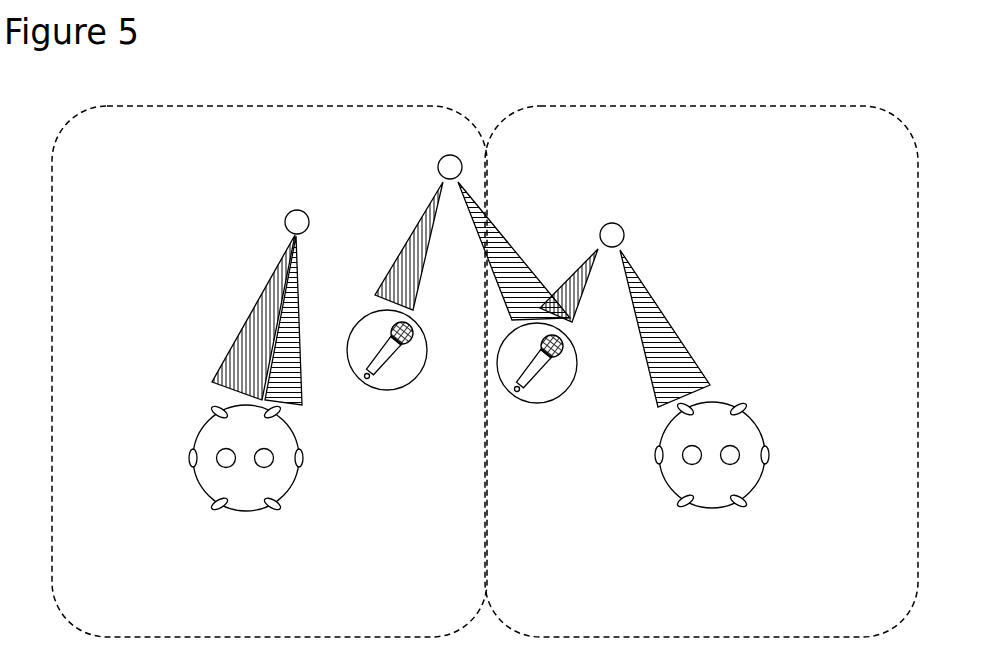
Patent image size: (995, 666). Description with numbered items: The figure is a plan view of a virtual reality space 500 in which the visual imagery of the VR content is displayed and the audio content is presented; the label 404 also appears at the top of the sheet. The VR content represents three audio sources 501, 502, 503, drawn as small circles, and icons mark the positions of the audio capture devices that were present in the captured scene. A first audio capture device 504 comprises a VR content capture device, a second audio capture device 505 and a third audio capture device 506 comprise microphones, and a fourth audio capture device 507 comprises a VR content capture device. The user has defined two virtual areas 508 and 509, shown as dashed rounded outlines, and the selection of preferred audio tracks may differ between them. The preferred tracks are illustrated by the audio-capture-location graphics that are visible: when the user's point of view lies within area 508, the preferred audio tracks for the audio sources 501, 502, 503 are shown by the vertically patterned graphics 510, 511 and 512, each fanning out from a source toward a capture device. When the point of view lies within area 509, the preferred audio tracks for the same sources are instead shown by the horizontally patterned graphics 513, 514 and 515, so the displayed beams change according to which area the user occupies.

The display device 404 is at (806, 14).
The virtual reality space 500 is at (300, 75).
The audio source 501 is at (296, 221).
The audio source 502 is at (448, 155).
The audio source 503 is at (619, 233).
The first audio capture device 504 is at (246, 496).
The second audio capture device 505 is at (393, 380).
The third audio capture device 506 is at (538, 397).
The fourth audio capture device 507 is at (712, 497).
The virtual area 508 is at (348, 636).
The virtual area 509 is at (634, 636).
The audio-capture-location graphic 510 is at (230, 358).
The audio-capture-location graphic 511 is at (390, 286).
The audio-capture-location graphic 512 is at (577, 292).
The audio-capture-location graphic 513 is at (290, 378).
The audio-capture-location graphic 514 is at (515, 264).
The audio-capture-location graphic 515 is at (665, 346).